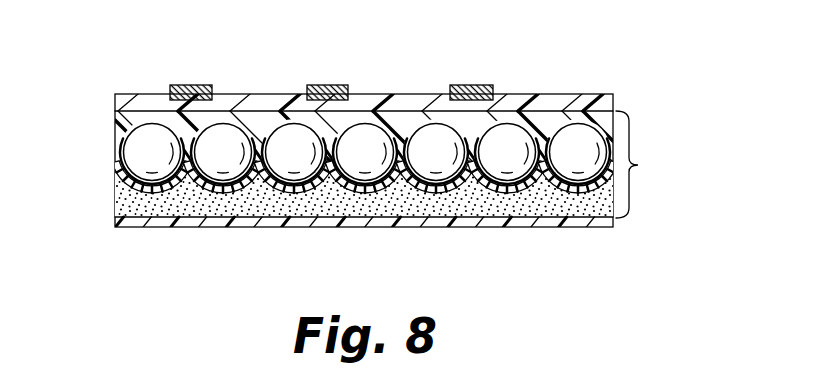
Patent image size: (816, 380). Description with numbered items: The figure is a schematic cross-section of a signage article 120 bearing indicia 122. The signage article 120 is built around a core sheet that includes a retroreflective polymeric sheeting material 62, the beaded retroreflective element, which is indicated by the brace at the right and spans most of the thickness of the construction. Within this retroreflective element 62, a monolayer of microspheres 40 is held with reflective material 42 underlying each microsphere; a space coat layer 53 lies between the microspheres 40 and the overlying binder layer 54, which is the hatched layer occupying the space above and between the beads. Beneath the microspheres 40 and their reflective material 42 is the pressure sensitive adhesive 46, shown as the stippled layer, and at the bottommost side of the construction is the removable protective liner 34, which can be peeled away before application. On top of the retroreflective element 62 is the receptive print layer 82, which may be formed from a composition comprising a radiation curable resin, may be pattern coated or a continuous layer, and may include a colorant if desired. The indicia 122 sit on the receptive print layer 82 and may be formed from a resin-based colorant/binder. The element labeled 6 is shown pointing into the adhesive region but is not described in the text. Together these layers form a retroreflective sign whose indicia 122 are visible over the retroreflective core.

The signage article 120 is at (596, 54).
The receptive print layer 82 is at (513, 100).
The indicia 122 is at (307, 92).
The binder layer 54 is at (128, 130).
The microspheres 40 is at (130, 146).
The space coat layer 53 is at (120, 168).
The reflective material 42 is at (130, 198).
The pressure sensitive adhesive 46 is at (162, 210).
The conductive layer 6 is at (432, 207).
The removable protective liner 34 is at (295, 218).
The retroreflective element 62 is at (644, 164).